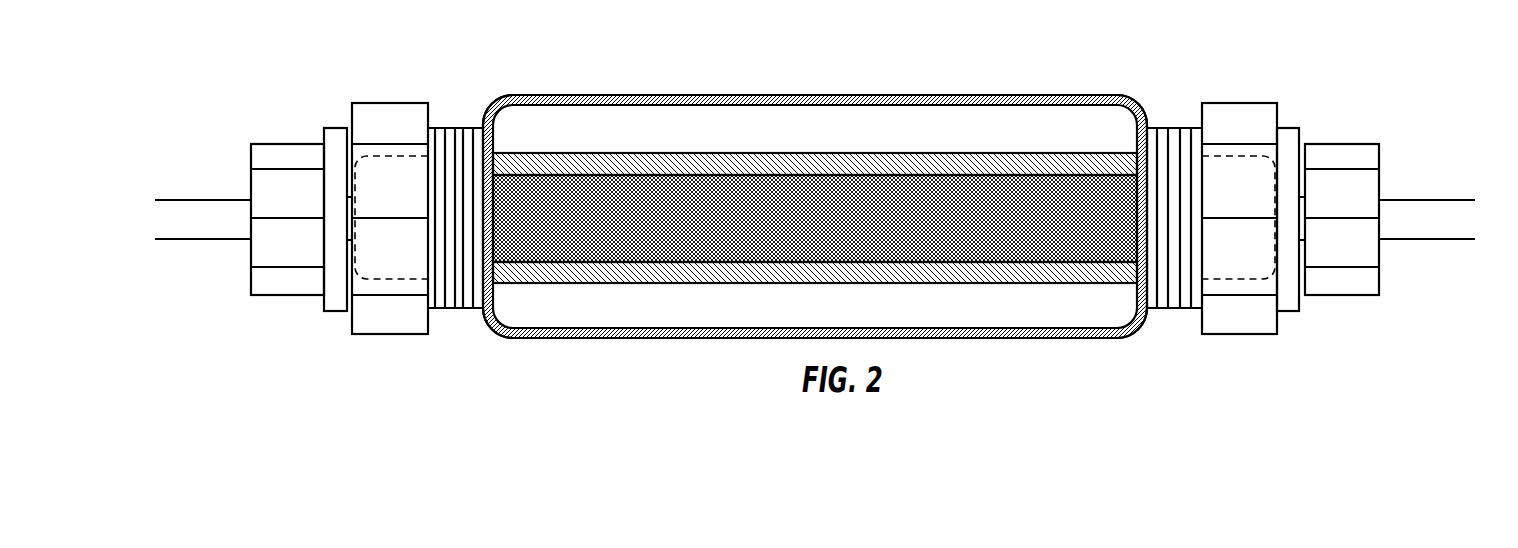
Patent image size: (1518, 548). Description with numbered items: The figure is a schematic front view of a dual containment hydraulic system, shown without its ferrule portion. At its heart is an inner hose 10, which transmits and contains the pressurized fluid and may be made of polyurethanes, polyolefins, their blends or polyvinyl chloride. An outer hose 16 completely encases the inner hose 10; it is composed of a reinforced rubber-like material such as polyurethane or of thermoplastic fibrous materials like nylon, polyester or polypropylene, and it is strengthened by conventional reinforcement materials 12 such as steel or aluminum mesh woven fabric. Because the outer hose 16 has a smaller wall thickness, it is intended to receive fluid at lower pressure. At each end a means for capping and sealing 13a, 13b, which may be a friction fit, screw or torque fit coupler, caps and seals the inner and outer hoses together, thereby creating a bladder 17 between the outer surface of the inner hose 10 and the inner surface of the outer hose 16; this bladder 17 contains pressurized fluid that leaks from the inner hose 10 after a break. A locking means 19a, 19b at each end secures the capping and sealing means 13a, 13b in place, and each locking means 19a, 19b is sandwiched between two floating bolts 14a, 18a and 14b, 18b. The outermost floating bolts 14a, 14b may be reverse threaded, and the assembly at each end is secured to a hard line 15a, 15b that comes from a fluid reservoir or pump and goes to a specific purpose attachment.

The inner hose 10 is at (945, 150).
The reinforcement materials 12 is at (935, 238).
The means for capping and sealing 13a is at (457, 123).
The means for capping and sealing 13b is at (1153, 137).
The floating bolt 14a is at (269, 198).
The floating bolt 14b is at (1358, 198).
The hard line 15a is at (241, 223).
The hard line 15b is at (1397, 223).
The outer hose 16 is at (573, 93).
The bladder 17 is at (727, 113).
The floating bolt 18a is at (392, 112).
The floating bolt 18b is at (1230, 112).
The locking means 19a is at (342, 148).
The locking means 19b is at (1287, 147).